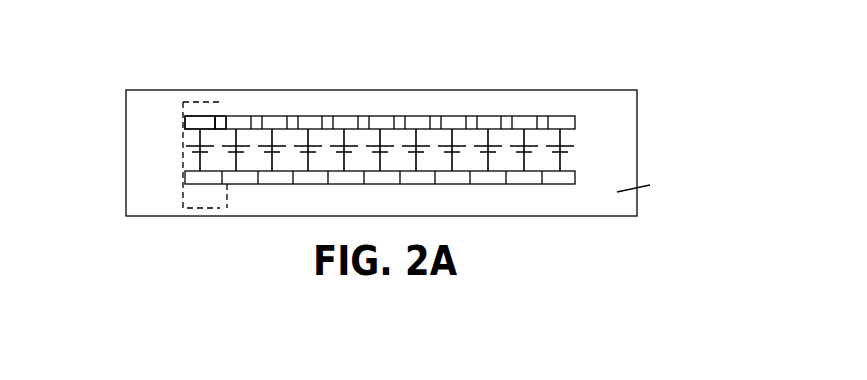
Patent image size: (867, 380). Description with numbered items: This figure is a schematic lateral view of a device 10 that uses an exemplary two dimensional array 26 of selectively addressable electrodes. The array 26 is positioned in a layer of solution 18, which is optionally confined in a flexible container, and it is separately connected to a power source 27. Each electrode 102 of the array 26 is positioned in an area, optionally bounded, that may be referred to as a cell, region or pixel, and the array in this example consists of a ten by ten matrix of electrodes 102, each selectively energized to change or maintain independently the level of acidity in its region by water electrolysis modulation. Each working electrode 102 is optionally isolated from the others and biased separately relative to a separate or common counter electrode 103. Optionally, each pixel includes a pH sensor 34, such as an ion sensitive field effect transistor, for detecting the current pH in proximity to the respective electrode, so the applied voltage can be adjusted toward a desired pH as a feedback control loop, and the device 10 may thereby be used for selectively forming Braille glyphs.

The device 10 is at (365, 141).
The layer of solution 18 is at (157, 191).
The two dimensional array 26 is at (538, 86).
The power source 27 is at (578, 138).
The pH sensor 34 is at (232, 106).
The electrode 102 is at (189, 112).
The counter electrode 103 is at (514, 198).